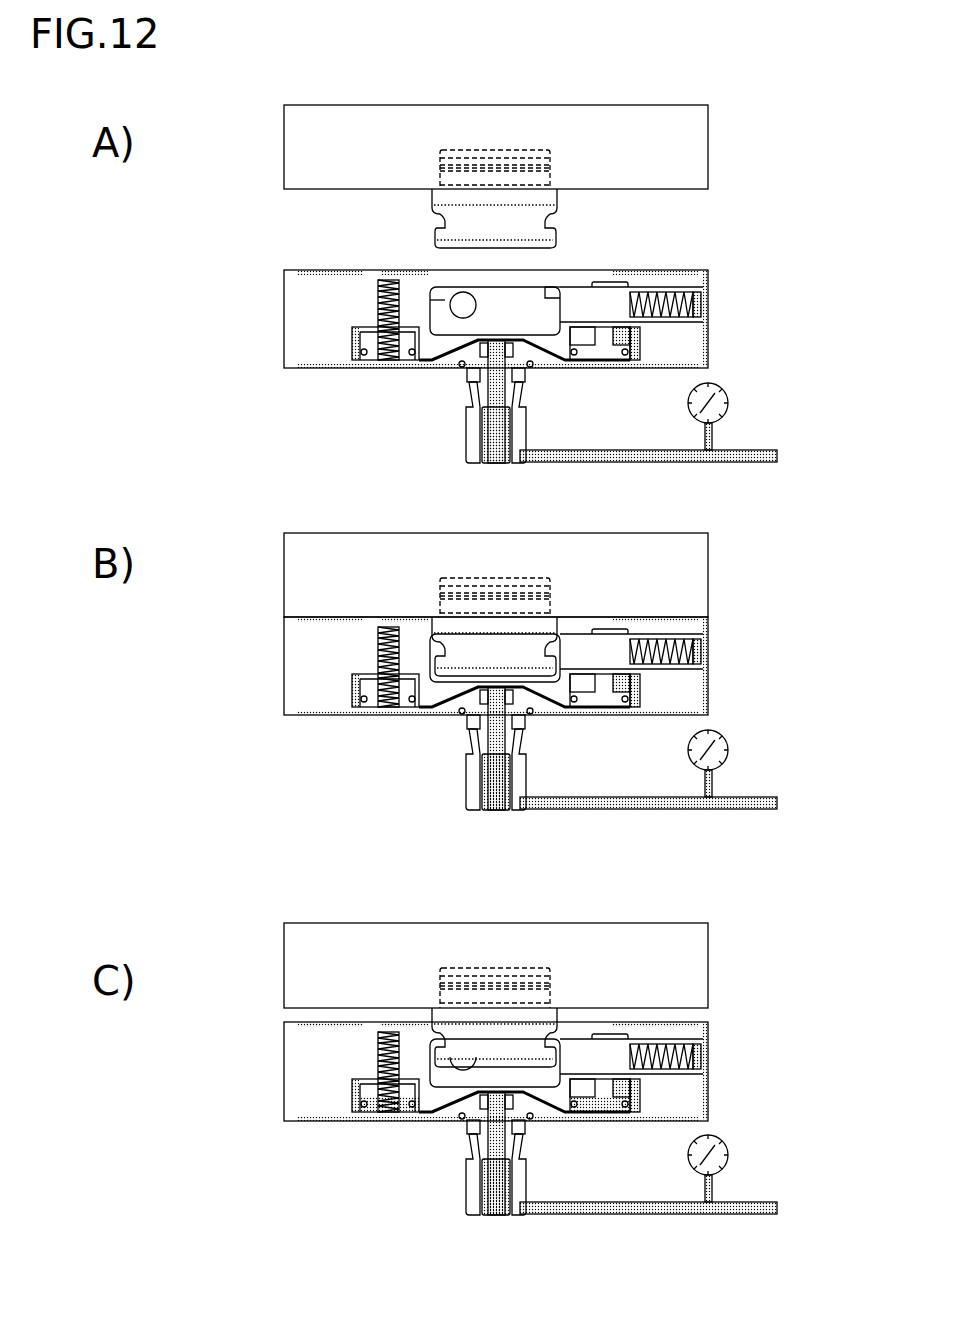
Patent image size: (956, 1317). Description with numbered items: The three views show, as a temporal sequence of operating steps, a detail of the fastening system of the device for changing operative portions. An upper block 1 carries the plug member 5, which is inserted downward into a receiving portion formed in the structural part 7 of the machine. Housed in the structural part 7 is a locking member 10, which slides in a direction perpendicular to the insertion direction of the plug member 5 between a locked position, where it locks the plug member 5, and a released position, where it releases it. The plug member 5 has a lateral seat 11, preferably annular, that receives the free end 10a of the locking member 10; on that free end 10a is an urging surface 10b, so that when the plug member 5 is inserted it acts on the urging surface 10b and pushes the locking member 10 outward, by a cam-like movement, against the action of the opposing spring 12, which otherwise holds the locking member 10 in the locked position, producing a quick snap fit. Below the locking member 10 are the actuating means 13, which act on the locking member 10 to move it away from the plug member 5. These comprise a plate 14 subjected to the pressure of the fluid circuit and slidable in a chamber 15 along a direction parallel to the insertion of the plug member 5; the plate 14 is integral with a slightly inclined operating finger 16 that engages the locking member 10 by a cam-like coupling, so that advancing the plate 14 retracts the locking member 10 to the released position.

In FIG. 12A, the upper mold block 1 is at (695, 138).
In FIG. 12B, the upper mold block 1 is at (695, 566).
In FIG. 12C, the upper mold block 1 is at (695, 956).
In FIG. 12A, the plug member 5 is at (408, 209).
In FIG. 12A, the structural part 7 is at (300, 330).
In FIG. 12B, the structural part 7 is at (300, 665).
In FIG. 12C, the structural part 7 is at (300, 1085).
In FIG. 12A, the locking member 10 is at (612, 298).
In FIG. 12B, the locking member 10 is at (612, 645).
In FIG. 12A, the free end 10a is at (535, 295).
In FIG. 12A, the urging surface 10b is at (552, 286).
In FIG. 12A, the lateral seat 11 is at (548, 220).
In FIG. 12A, the opposing spring 12 is at (690, 307).
In FIG. 12B, the opposing spring 12 is at (690, 655).
In FIG. 12C, the opposing spring 12 is at (690, 1064).
In FIG. 12A, the actuating means 13 is at (578, 390).
In FIG. 12B, the actuating means 13 is at (578, 738).
In FIG. 12C, the actuating means 13 is at (578, 1145).
In FIG. 12A, the plate 14 is at (605, 351).
In FIG. 12B, the plate 14 is at (605, 699).
In FIG. 12C, the plate 14 is at (605, 1090).
In FIG. 12A, the chamber 15 is at (628, 360).
In FIG. 12B, the chamber 15 is at (628, 707).
In FIG. 12C, the chamber 15 is at (612, 1108).
In FIG. 12A, the operating finger 16 is at (600, 336).
In FIG. 12B, the operating finger 16 is at (600, 680).
In FIG. 12C, the operating finger 16 is at (612, 1040).